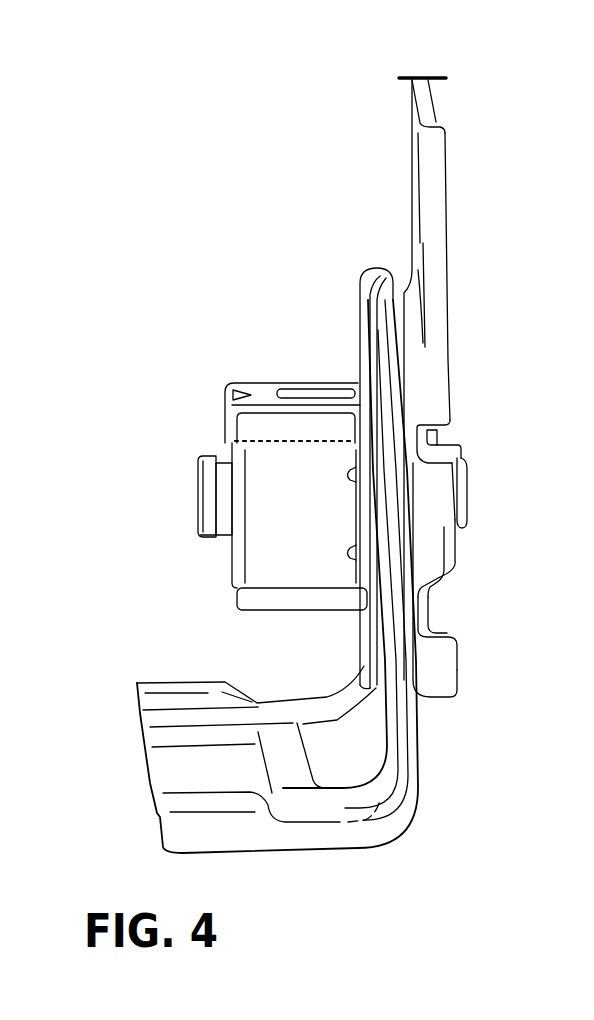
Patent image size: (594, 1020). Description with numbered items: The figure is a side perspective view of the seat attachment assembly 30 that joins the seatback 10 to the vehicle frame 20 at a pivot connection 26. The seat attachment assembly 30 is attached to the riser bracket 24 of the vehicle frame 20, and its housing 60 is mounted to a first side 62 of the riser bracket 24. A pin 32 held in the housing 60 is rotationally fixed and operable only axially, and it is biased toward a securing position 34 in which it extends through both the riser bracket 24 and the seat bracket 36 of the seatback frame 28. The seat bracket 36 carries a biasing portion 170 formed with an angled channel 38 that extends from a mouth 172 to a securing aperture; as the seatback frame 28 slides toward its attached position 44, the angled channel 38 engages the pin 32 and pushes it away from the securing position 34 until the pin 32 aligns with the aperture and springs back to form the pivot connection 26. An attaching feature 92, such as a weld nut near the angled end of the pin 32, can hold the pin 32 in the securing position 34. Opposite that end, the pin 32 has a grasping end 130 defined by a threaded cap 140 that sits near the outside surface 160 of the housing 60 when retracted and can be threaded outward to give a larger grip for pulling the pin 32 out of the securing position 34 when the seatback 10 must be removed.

The seatback 10 is at (462, 88).
The vehicle frame 20 is at (383, 853).
The riser bracket 24 is at (375, 791).
The pivot connection 26 is at (459, 429).
The seatback frame 28 is at (454, 130).
The seat attachment assembly 30 is at (232, 337).
The pin 32 is at (228, 466).
The securing position 34 is at (188, 538).
The seat bracket 36 is at (432, 217).
The angled channel 38 is at (433, 488).
The attached position 44 is at (459, 306).
The housing 60 is at (255, 393).
The first side 62 is at (362, 308).
The attaching feature 92 is at (462, 503).
The grasping end 130 is at (185, 468).
The threaded cap 140 is at (212, 538).
The outside surface 160 is at (262, 395).
The biasing portion 170 is at (458, 598).
The mouth 172 is at (440, 560).